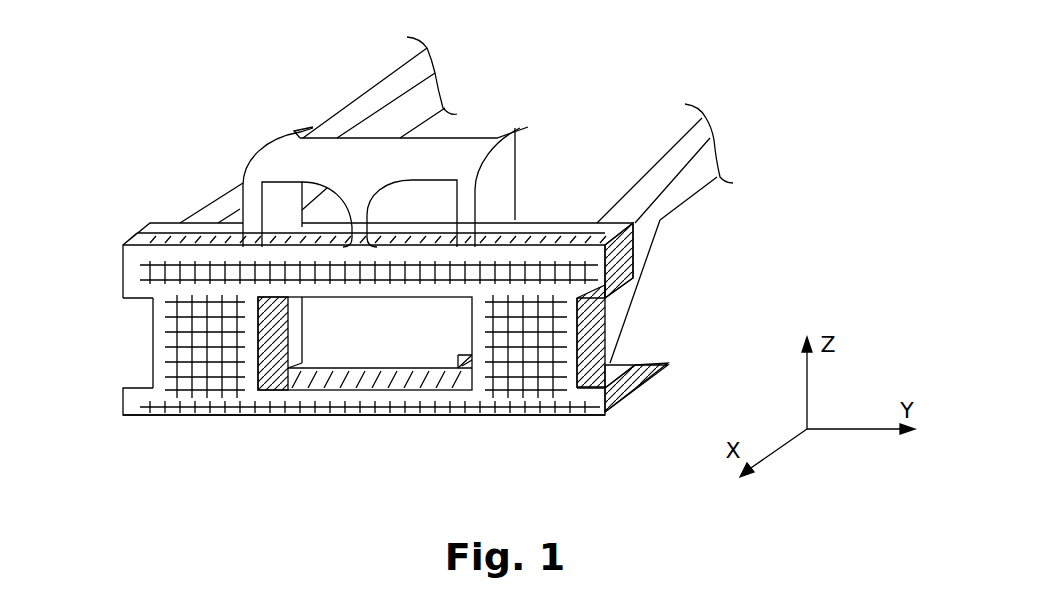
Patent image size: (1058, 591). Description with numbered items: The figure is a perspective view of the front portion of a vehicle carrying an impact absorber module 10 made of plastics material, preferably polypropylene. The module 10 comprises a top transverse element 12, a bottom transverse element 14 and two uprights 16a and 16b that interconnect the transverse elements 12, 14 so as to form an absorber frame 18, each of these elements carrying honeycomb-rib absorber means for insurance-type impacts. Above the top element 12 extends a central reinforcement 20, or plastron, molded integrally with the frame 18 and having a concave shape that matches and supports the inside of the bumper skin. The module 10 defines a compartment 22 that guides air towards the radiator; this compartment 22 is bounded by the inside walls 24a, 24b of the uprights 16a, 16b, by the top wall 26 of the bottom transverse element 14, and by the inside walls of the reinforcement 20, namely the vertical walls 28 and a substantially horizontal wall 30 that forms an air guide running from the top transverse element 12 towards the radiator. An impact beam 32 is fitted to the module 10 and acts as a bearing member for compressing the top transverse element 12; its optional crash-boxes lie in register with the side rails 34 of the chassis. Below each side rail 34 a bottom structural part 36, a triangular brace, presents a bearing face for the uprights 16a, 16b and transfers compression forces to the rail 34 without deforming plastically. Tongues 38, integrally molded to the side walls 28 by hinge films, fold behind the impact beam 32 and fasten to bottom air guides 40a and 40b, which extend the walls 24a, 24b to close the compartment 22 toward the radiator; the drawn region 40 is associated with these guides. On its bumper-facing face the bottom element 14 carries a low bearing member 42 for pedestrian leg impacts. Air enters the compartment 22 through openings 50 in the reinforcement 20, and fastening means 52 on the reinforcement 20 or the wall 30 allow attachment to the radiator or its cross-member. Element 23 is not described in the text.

The impact absorber module 10 is at (118, 183).
The top transverse element 12 is at (592, 268).
The bottom transverse element 14 is at (600, 398).
The upright 16a is at (165, 352).
The upright 16b is at (575, 333).
The absorber frame 18 is at (185, 447).
The central reinforcement 20 is at (480, 110).
The compartment 22 is at (365, 343).
The curved transition 23 is at (522, 177).
The inside wall 24a is at (281, 372).
The inside wall 24b is at (453, 378).
The top wall 26 is at (346, 390).
The vertical wall 28 is at (275, 210).
The horizontal wall 30 is at (287, 160).
The impact beam 32 is at (635, 250).
The side rail 34 is at (381, 95).
The bottom structural part 36 is at (615, 309).
The tongue 38 is at (520, 214).
The tab 40 is at (658, 372).
The bottom air guide 40a is at (305, 306).
The bottom air guide 40b is at (465, 310).
The low bearing member 42 is at (525, 410).
The opening 50 is at (337, 210).
The fastening means 52 is at (522, 126).